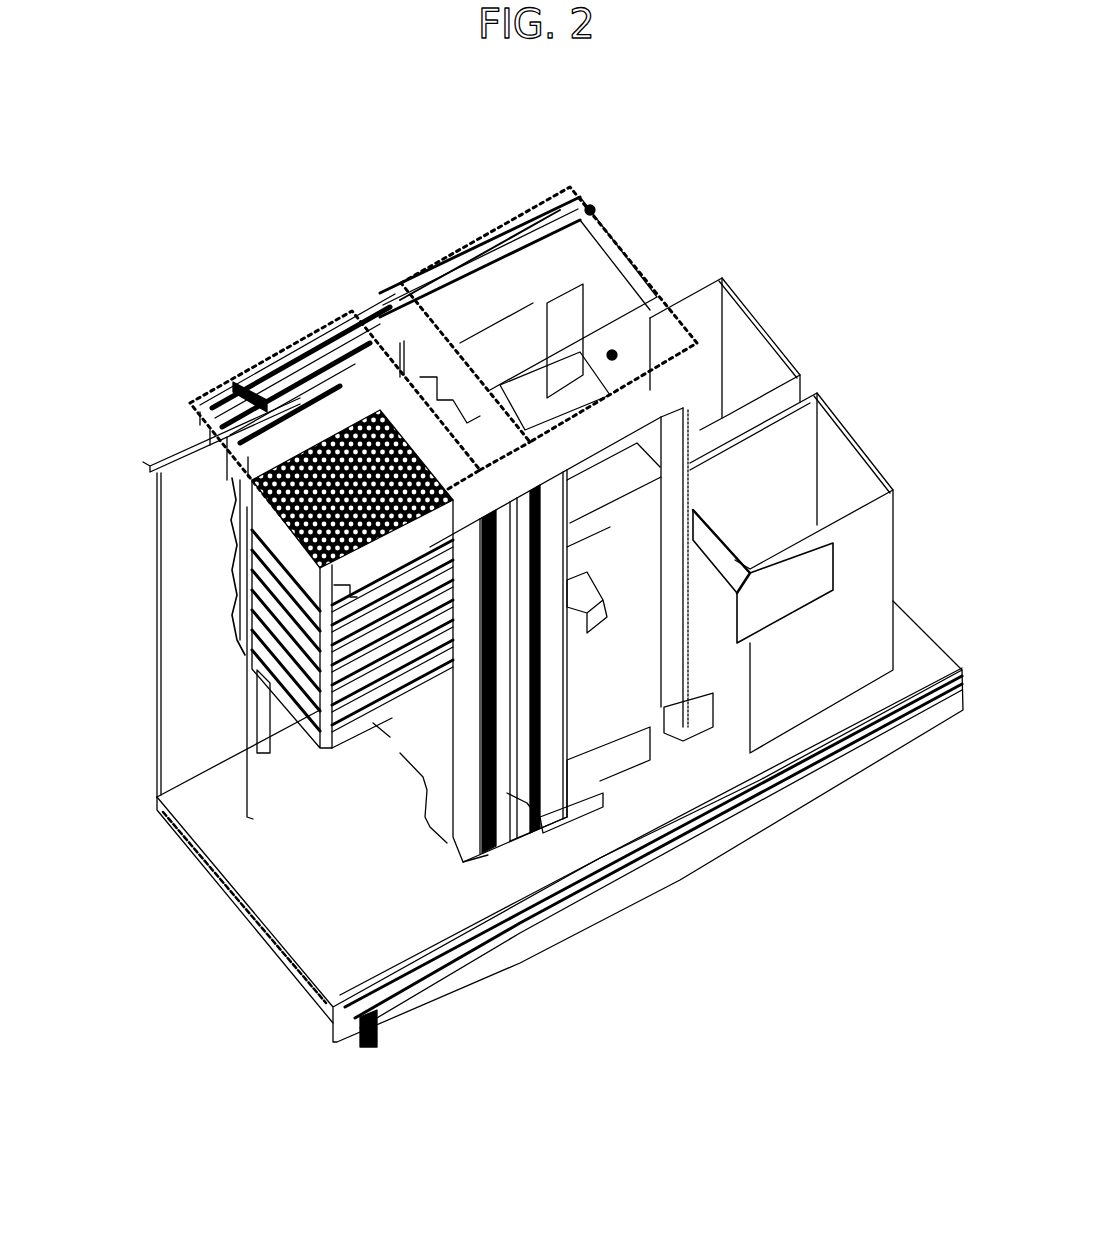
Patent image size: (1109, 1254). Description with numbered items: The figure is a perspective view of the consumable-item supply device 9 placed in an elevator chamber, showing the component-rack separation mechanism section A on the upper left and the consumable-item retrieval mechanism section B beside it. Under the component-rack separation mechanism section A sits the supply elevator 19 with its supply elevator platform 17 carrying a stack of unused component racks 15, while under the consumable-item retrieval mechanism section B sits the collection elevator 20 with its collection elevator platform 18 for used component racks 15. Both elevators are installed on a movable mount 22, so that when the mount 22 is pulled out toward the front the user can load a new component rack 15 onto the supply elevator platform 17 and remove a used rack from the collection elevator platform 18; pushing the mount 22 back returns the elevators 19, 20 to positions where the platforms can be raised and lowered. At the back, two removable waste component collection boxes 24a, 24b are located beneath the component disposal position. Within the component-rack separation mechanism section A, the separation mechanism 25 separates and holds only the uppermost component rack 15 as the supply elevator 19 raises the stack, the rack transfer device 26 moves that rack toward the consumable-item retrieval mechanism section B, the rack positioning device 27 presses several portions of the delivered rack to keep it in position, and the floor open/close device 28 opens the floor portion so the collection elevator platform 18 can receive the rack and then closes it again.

The consumable-item supply device 9 is at (583, 110).
The component rack 15 is at (325, 667).
The supply elevator platform 17 is at (393, 713).
The collection elevator platform 18 is at (613, 535).
The supply elevator 19 is at (247, 673).
The collection elevator 20 is at (737, 612).
The movable mount 22 is at (807, 780).
The waste component collection box 24a is at (763, 318).
The waste component collection box 24b is at (865, 455).
The separation mechanism 25 is at (317, 400).
The rack transfer device 26 is at (300, 480).
The rack positioning device 27 is at (633, 338).
The floor open/close device 28 is at (430, 365).
The component-rack separation mechanism section A is at (265, 352).
The consumable-item retrieval mechanism section B is at (487, 228).